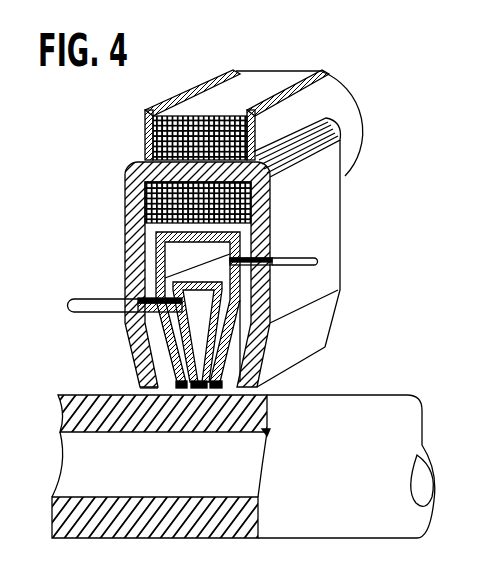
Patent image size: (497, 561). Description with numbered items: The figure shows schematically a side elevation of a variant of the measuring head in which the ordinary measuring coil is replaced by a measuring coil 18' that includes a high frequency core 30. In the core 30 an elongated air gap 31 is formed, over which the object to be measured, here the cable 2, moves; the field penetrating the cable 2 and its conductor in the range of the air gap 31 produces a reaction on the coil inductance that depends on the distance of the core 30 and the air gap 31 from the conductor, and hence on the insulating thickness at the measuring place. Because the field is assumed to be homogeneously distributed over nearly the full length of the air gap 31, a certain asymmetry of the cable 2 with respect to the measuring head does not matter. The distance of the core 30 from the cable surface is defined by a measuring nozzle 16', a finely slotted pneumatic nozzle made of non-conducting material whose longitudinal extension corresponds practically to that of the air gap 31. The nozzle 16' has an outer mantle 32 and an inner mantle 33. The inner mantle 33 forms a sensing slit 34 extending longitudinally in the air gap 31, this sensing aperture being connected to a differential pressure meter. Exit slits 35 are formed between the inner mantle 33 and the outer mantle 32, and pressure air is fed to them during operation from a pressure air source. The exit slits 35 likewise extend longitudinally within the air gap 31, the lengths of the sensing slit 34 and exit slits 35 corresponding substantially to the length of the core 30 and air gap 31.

The cable 2 is at (372, 410).
The measuring nozzle 16' is at (151, 305).
The measuring coil 18' is at (237, 94).
The high frequency core 30 is at (322, 188).
The air gap 31 is at (152, 390).
The outer mantle 32 is at (238, 327).
The inner mantle 33 is at (162, 325).
The sensing slit 34 is at (196, 390).
The exit slits 35 is at (183, 390).